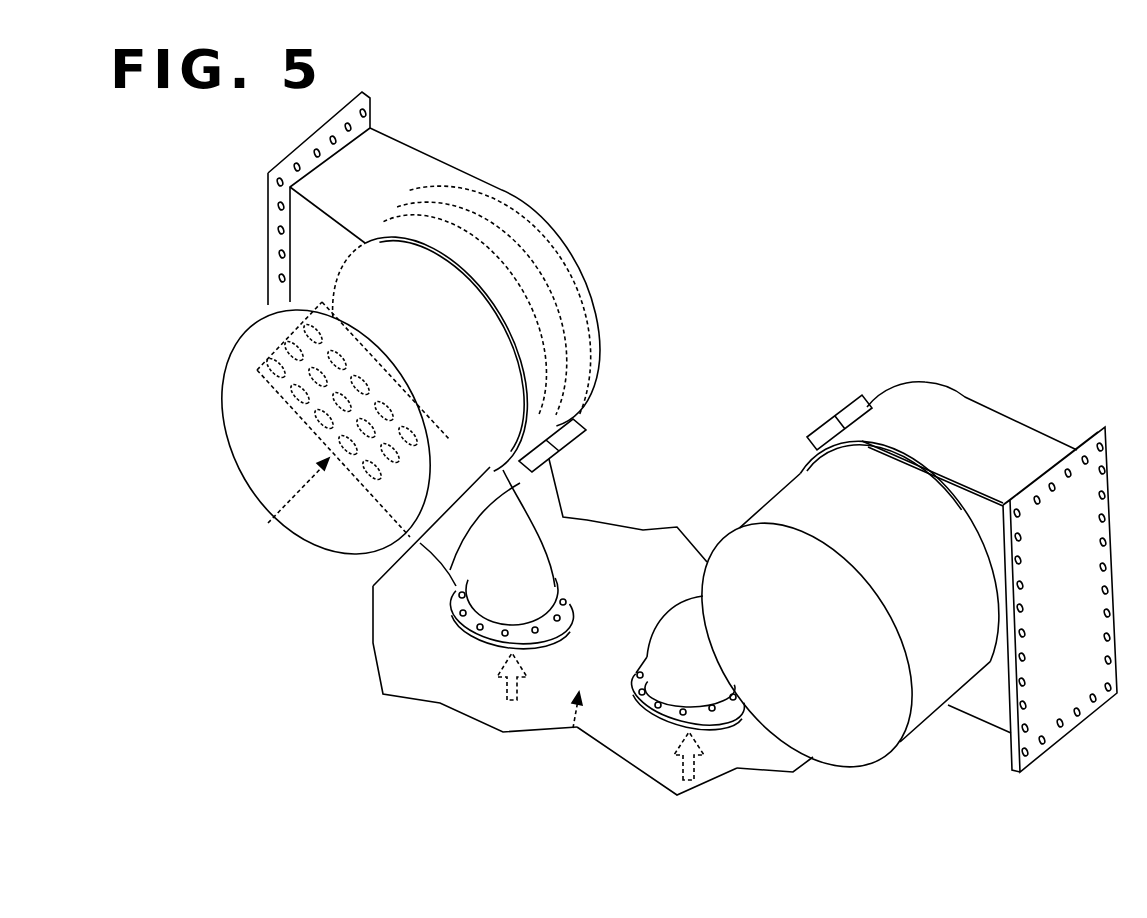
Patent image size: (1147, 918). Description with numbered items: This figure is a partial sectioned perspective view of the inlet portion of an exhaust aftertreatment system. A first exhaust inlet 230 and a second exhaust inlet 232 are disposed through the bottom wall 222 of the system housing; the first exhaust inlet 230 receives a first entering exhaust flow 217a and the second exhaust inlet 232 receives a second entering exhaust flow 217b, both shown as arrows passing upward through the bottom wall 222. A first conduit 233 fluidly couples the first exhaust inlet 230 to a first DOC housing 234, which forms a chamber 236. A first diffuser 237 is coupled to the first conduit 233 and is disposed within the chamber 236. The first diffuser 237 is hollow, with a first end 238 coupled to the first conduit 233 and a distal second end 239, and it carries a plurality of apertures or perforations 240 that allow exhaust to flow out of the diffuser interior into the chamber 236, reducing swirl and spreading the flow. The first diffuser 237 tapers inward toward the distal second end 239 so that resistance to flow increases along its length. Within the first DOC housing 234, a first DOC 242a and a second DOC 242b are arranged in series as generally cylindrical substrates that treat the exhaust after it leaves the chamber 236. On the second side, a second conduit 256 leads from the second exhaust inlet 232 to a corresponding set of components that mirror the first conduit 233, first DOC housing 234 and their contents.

The first DOC 242a is at (425, 213).
The second DOC 242b is at (472, 202).
The distal second end 239 is at (300, 340).
The apertures or perforations 240 is at (282, 395).
The first diffuser 237 is at (280, 405).
The chamber 236 is at (268, 523).
The first DOC housing 234 is at (372, 553).
The first conduit 233 is at (490, 590).
The first end 238 is at (483, 505).
The second conduit 256 is at (685, 622).
The first exhaust inlet 230 is at (545, 645).
The first entering exhaust flow 217a is at (512, 692).
The bottom wall 222 is at (573, 730).
The second exhaust inlet 232 is at (663, 720).
The second entering exhaust flow 217b is at (695, 771).